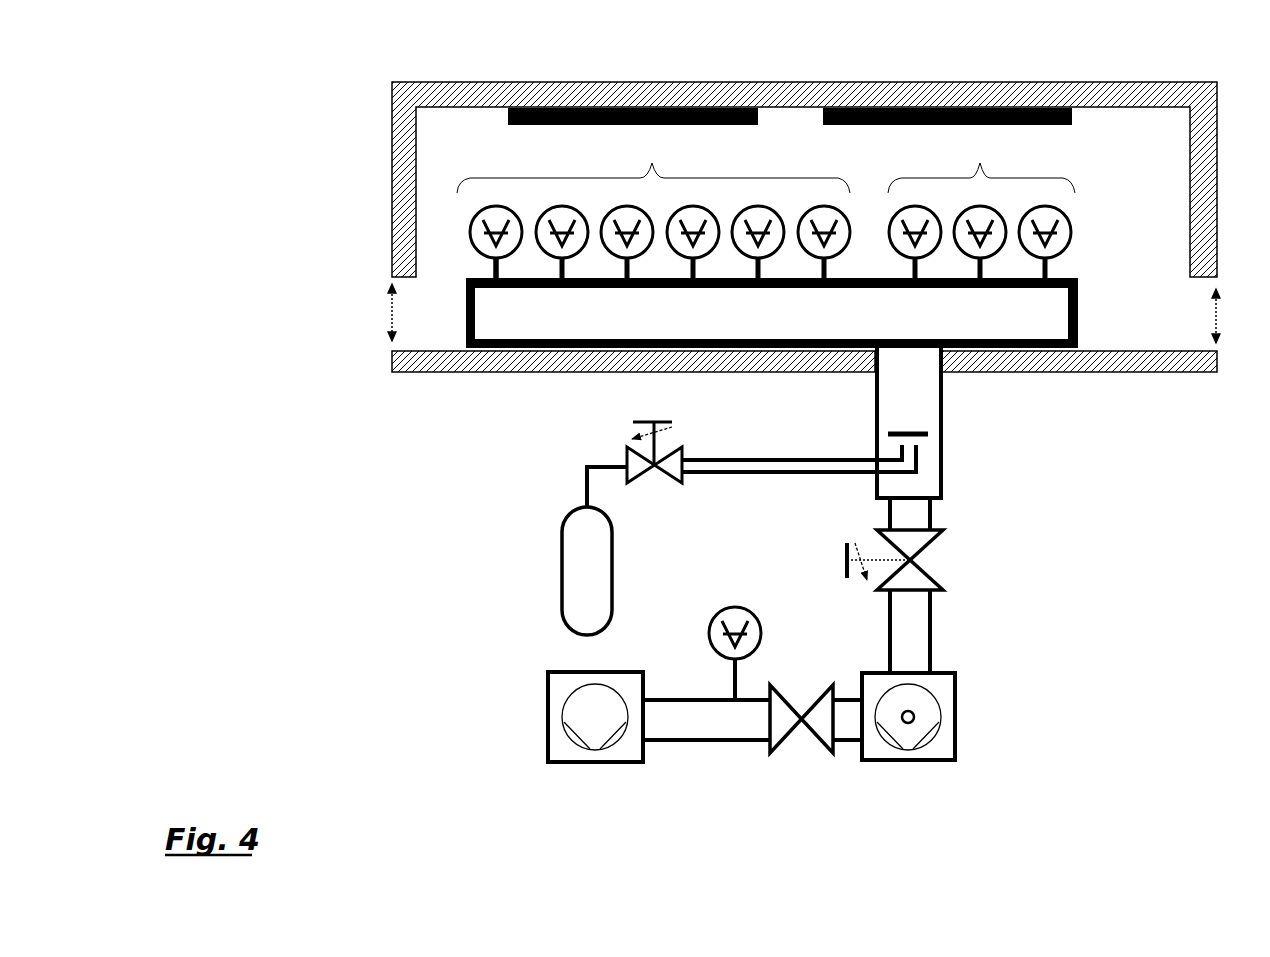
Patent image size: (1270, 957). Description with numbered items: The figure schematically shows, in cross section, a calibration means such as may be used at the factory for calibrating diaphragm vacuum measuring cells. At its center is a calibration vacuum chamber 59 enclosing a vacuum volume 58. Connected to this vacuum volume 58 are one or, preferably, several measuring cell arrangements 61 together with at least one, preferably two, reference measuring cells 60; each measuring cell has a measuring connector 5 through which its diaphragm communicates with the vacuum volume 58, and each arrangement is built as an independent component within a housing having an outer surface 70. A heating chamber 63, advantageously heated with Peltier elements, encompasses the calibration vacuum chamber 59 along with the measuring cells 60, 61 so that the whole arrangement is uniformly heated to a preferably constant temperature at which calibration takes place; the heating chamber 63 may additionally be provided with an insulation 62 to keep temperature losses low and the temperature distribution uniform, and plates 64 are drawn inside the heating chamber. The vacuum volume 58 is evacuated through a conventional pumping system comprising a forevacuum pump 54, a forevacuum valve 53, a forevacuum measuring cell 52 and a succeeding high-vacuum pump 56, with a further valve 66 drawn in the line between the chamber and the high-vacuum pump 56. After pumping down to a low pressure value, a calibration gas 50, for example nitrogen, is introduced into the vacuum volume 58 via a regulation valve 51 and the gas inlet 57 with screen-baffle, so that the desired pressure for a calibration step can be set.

The measuring connector 5 is at (487, 267).
The calibration gas 50 is at (668, 598).
The regulation valve 51 is at (680, 483).
The forevacuum measuring cell 52 is at (815, 622).
The forevacuum valve 53 is at (785, 700).
The forevacuum pump 54 is at (628, 683).
The high-vacuum pump 56 is at (940, 683).
The gas inlet 57 is at (927, 417).
The vacuum volume 58 is at (1052, 327).
The calibration vacuum chamber 59 is at (1082, 290).
The reference measuring cell 60 is at (981, 165).
The measuring cell arrangement 61 is at (653, 165).
The insulation 62 is at (1130, 372).
The heating chamber 63 is at (1215, 143).
The reflector plate 64 is at (718, 126).
The exhaust valve 66 is at (927, 577).
The outer surface 70 is at (470, 228).